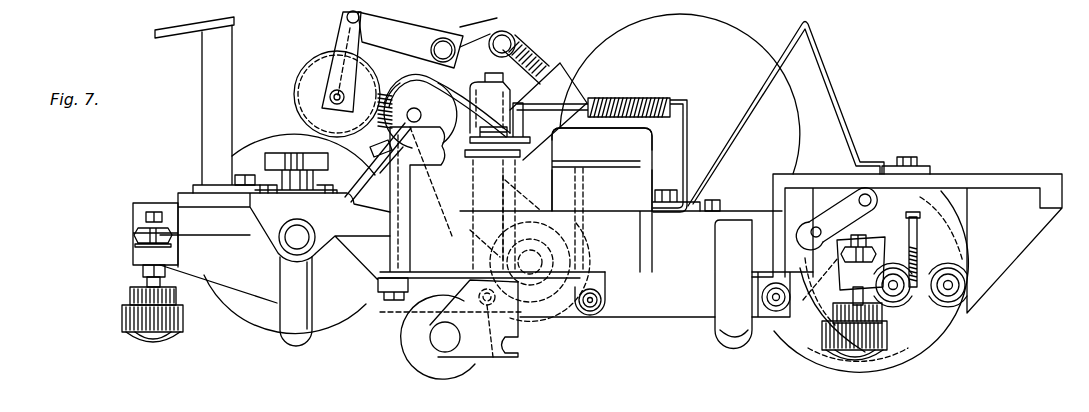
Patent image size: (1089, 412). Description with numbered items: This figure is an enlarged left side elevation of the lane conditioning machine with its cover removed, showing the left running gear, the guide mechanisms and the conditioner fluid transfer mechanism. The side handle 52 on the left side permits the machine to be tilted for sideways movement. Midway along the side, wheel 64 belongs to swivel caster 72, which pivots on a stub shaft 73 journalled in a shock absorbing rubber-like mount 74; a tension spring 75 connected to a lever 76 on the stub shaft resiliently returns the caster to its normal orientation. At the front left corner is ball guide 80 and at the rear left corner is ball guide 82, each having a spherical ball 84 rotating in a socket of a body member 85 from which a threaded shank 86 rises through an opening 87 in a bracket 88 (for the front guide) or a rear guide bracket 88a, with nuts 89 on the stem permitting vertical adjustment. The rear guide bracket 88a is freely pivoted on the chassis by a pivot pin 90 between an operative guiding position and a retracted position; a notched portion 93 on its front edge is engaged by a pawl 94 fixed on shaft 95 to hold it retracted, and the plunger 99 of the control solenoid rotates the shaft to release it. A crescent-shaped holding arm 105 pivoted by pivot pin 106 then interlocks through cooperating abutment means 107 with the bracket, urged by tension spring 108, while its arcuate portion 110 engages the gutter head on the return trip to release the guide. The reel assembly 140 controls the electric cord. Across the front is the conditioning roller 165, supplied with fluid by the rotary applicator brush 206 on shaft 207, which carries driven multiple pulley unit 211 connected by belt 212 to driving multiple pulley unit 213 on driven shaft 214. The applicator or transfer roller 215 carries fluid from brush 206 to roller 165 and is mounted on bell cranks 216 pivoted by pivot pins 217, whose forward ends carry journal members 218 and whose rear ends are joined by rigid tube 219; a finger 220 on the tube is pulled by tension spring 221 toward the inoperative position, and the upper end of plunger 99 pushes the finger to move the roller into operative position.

The side handle 52 is at (613, 158).
The wheel 64 is at (444, 368).
The swivel caster 72 is at (489, 358).
The stub shaft 73 is at (513, 192).
The shock absorbing rubber-like mount 74 is at (572, 163).
The tension spring 75 is at (594, 100).
The lever 76 is at (507, 128).
The ball guide 80 is at (116, 303).
The ball guide 82 is at (824, 361).
The spherical ball 84 is at (163, 333).
The body member 85 is at (127, 318).
The threaded shank 86 is at (147, 280).
The opening 87 is at (135, 242).
The bracket 88 is at (132, 250).
The rear guide bracket 88a is at (835, 303).
The nut 89 is at (137, 226).
The pivot pin 90 is at (900, 289).
The notched portion 93 is at (827, 254).
The pawl 94 is at (838, 203).
The shaft 95 is at (873, 198).
The plunger 99 is at (534, 58).
The holding arm 105 is at (952, 318).
The pivot pin 106 is at (968, 285).
The cooperating abutment means 107 is at (907, 222).
The tension spring 108 is at (955, 263).
The arcuate portion 110 is at (937, 341).
The reel assembly 140 is at (810, 101).
The conditioning roller 165 is at (265, 130).
The rotary metering roll or applicator brush 206 is at (364, 112).
The shaft 207 is at (379, 159).
The driven multiple pulley unit 211 is at (408, 85).
The belt 212 is at (433, 104).
The driving multiple pulley unit 213 is at (560, 316).
The driven shaft 214 is at (576, 232).
The applicator or transfer roller 215 is at (318, 73).
The bell crank 216 is at (356, 44).
The pivot pin 217 is at (346, 18).
The applicator roll journal member 218 is at (330, 97).
The rigid tube 219 is at (433, 43).
The finger 220 is at (510, 35).
The tension spring 221 is at (538, 45).